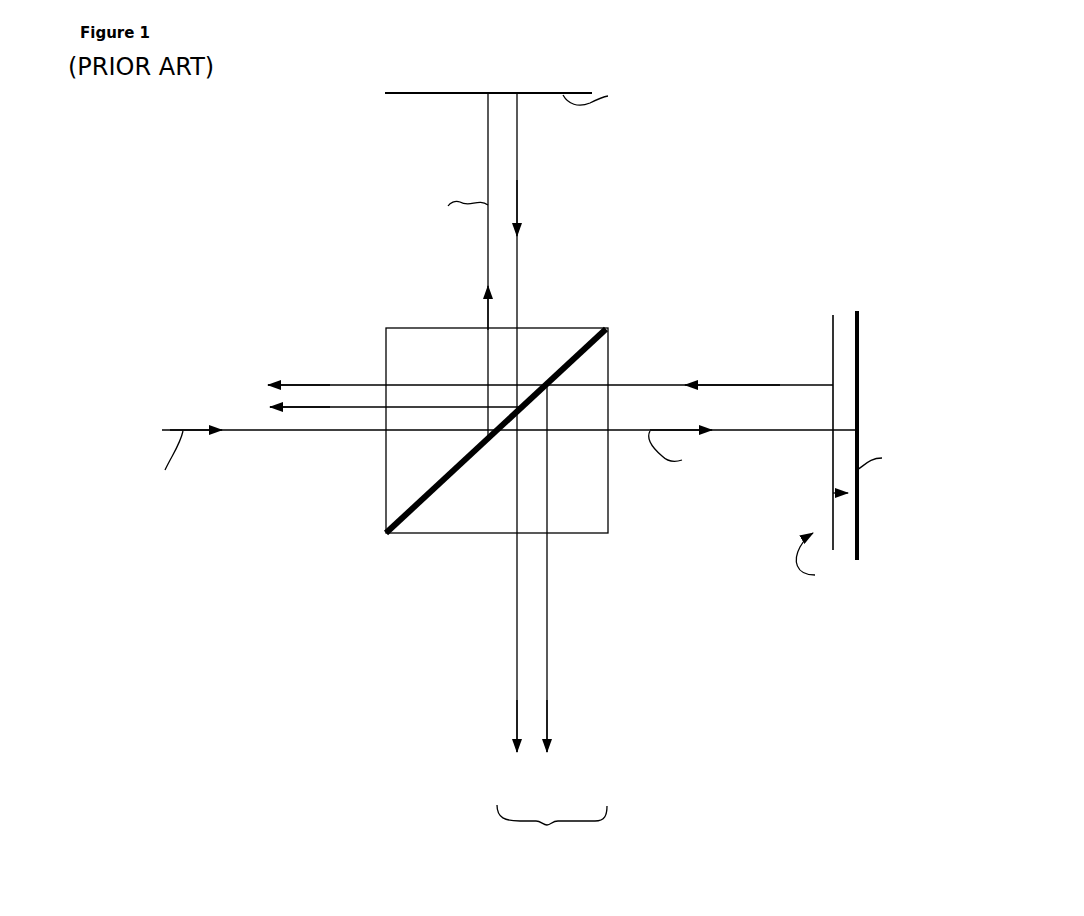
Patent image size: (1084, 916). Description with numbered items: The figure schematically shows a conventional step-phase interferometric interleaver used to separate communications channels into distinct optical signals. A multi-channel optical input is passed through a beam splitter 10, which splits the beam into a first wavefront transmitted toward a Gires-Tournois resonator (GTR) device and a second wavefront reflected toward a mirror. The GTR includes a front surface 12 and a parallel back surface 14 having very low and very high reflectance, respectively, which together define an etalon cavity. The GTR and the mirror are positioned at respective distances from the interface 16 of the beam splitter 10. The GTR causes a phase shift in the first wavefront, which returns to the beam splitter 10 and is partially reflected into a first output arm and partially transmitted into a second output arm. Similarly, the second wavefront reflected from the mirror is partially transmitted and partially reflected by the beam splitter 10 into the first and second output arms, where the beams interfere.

The beam splitter 10 is at (530, 450).
The front surface 12 is at (833, 335).
The back surface 14 is at (850, 322).
The interface 16 is at (428, 505).